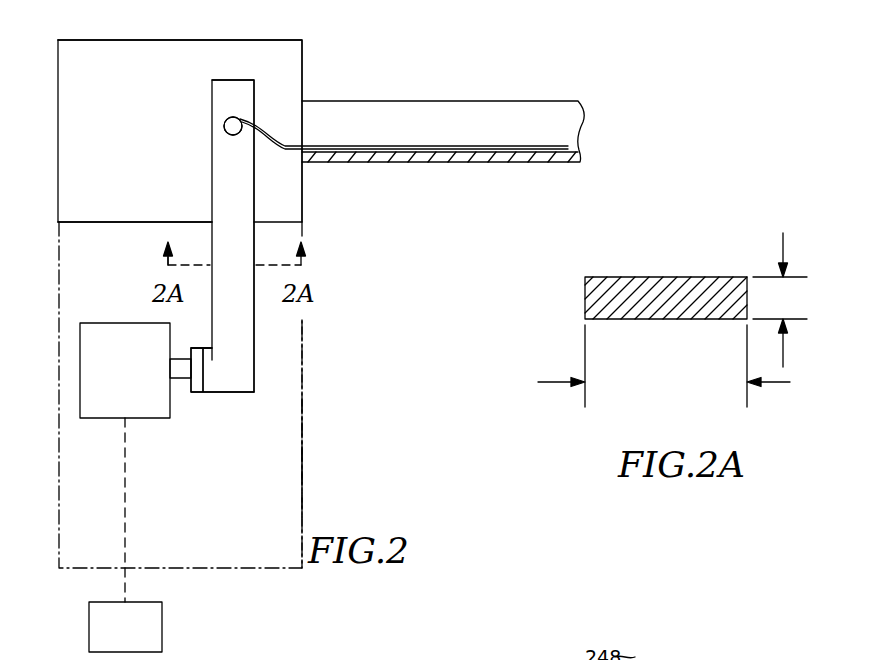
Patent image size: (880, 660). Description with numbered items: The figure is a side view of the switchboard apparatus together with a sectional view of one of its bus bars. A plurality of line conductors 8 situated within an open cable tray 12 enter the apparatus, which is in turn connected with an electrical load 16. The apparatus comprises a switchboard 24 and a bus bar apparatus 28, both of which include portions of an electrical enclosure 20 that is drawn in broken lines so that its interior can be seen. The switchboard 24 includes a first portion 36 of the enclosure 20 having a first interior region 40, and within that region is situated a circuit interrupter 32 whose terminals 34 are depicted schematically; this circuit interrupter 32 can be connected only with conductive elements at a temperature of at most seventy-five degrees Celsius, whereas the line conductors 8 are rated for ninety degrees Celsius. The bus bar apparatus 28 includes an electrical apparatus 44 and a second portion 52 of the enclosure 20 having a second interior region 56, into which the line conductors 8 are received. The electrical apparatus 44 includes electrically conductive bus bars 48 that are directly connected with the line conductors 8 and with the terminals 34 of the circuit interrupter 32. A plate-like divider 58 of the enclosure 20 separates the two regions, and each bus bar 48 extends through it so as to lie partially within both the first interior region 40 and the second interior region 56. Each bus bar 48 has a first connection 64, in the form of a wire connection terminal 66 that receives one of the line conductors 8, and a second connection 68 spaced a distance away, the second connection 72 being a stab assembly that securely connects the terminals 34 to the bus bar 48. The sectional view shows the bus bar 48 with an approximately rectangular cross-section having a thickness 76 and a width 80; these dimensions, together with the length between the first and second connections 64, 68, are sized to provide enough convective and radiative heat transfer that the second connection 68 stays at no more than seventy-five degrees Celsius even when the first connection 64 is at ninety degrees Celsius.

In FIG. 2, the line conductors 8 is at (340, 145).
In FIG. 2, the cable tray 12 is at (585, 120).
In FIG. 2, the electrical load 16 is at (162, 620).
In FIG. 2, the electrical enclosure 20 is at (318, 437).
In FIG. 2, the switchboard 24 is at (318, 483).
In FIG. 2, the bus bar apparatus 28 is at (250, 30).
In FIG. 2, the circuit interrupter 32 is at (108, 418).
In FIG. 2, the terminals 34 is at (178, 380).
In FIG. 2, the first portion 36 is at (303, 378).
In FIG. 2, the first interior region 40 is at (277, 540).
In FIG. 2, the electrical apparatus 44 is at (270, 197).
In FIG. 2, the bus bars 48 is at (196, 166).
In FIG. 2A, the bus bars 48 is at (652, 277).
In FIG. 2, the second portion 52 is at (97, 40).
In FIG. 2, the second interior region 56 is at (95, 84).
In FIG. 2, the divider 58 is at (130, 222).
In FIG. 2, the first connection 64 is at (226, 117).
In FIG. 2, the wire connection terminal 66 is at (224, 127).
In FIG. 2, the second connection 68 is at (198, 392).
In FIG. 2, the second connection 72 is at (201, 348).
In FIG. 2A, the thickness 76 is at (783, 240).
In FIG. 2A, the width 80 is at (553, 380).